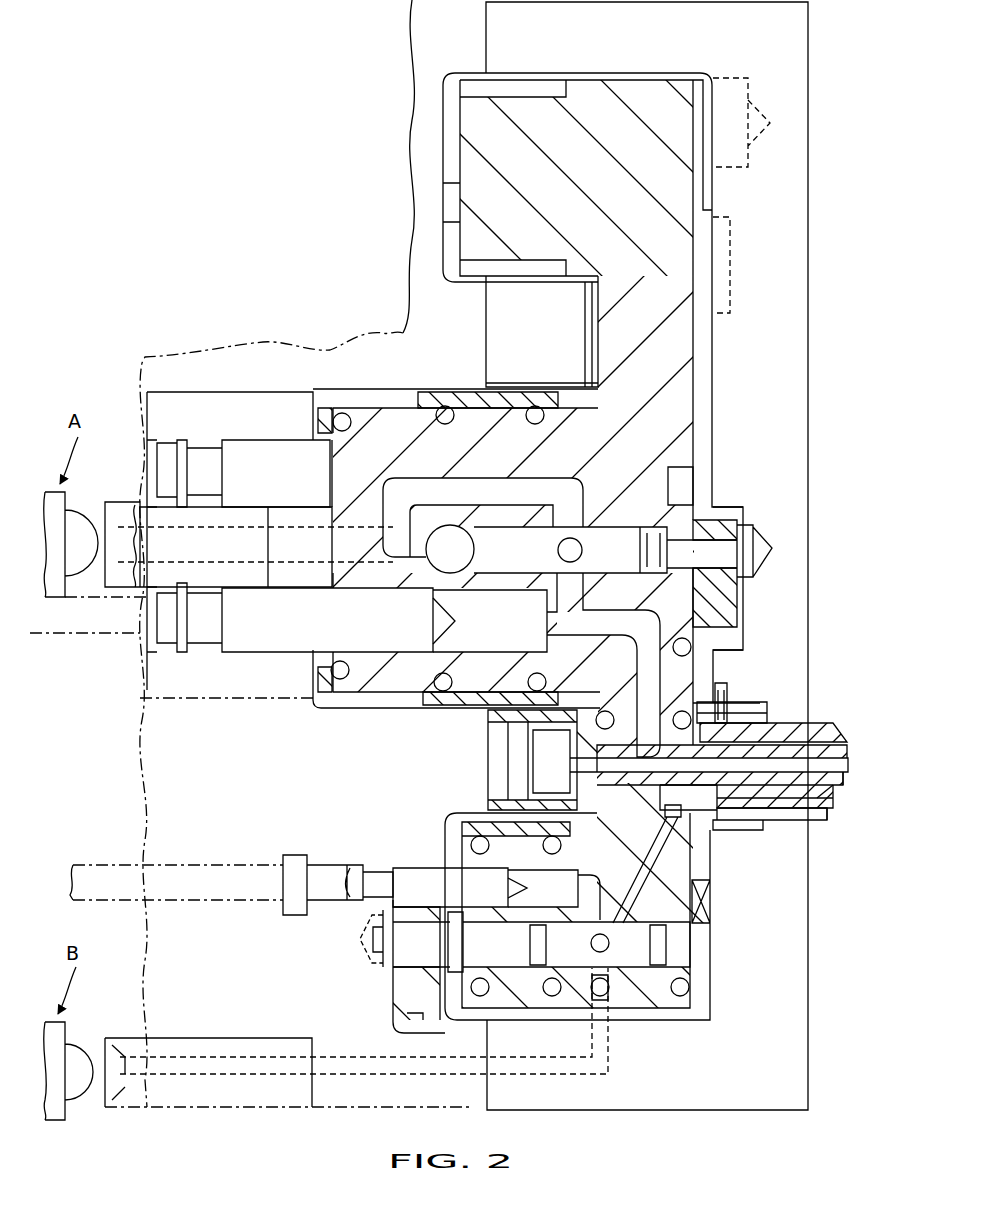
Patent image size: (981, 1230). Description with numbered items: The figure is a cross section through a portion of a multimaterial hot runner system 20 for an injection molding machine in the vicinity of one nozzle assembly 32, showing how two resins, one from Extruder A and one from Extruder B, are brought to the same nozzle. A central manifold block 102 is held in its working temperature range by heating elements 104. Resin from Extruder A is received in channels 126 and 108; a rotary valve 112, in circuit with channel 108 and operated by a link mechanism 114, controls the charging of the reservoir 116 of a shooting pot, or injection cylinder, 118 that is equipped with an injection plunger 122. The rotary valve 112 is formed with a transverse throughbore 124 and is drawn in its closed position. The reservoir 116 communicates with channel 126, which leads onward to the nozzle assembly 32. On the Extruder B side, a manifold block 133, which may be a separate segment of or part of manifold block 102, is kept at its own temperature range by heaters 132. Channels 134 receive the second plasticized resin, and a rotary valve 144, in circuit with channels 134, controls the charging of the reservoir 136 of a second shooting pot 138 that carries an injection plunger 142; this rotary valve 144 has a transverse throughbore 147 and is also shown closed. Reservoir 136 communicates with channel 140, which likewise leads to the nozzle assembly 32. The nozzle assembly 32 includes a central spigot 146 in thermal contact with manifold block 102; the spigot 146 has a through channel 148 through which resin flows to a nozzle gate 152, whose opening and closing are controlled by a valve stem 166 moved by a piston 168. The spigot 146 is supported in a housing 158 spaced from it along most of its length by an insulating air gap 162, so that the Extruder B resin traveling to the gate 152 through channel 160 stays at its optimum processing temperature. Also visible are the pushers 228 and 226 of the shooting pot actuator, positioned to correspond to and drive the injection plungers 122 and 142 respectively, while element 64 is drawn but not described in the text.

The hot runner system 20 is at (362, 382).
The central manifold block 102 is at (387, 397).
The heating elements 104 is at (538, 424).
The channel 108 is at (492, 503).
The transverse throughbore 124 is at (570, 538).
The rotary valve 112 is at (629, 556).
The link mechanism 114 is at (720, 527).
The injection plunger 122 is at (344, 626).
The reservoir 116 is at (518, 630).
The channel 126 is at (631, 635).
The shooting pot 118 is at (285, 668).
The pushers 228 is at (63, 623).
The passage 64 is at (607, 712).
The central spigot 146 is at (727, 703).
The insulating air gap 162 is at (793, 707).
The nozzle assembly 32 is at (850, 734).
The piston 168 is at (515, 762).
The heating elements 132 is at (545, 843).
The nozzle gate 152 is at (840, 778).
The through channel 148 is at (797, 805).
The valve stem 166 is at (833, 793).
The channel 160 is at (812, 815).
The housing 158 is at (760, 828).
The channel 140 is at (693, 863).
The pushers 226 is at (115, 875).
The injection plunger 142 is at (464, 898).
The reservoir 136 is at (572, 898).
The shooting pot 138 is at (352, 918).
The rotary valve 144 is at (512, 956).
The manifold block 133 is at (400, 993).
The channels 134 is at (552, 996).
The transverse throughbore 147 is at (605, 952).